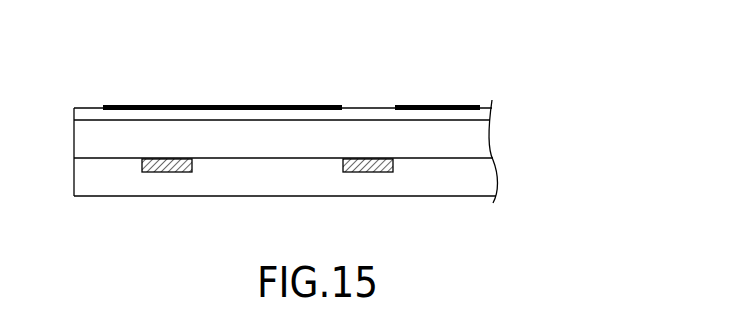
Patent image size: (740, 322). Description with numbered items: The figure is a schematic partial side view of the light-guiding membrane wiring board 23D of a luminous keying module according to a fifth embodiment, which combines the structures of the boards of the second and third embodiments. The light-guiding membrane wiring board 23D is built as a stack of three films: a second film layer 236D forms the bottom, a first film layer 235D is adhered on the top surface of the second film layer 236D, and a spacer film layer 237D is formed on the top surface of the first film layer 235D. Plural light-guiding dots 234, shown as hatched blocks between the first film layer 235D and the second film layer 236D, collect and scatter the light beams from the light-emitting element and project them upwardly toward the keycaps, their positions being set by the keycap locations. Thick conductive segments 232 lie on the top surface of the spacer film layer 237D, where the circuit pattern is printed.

The light-guiding membrane wiring board 23D is at (210, 54).
The electrode 232 is at (143, 105).
The spacer film layer 237D is at (372, 115).
The first film layer 235D is at (483, 147).
The second film layer 236D is at (440, 178).
The light-guiding dots 234 is at (152, 168).